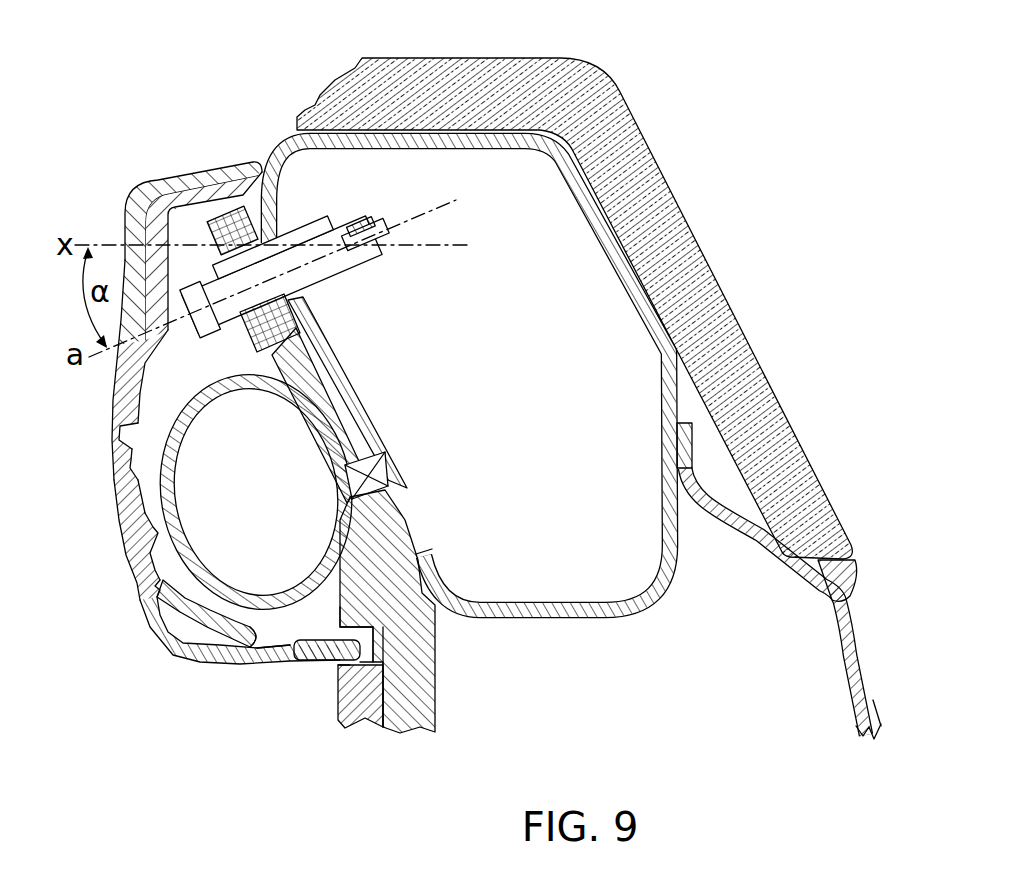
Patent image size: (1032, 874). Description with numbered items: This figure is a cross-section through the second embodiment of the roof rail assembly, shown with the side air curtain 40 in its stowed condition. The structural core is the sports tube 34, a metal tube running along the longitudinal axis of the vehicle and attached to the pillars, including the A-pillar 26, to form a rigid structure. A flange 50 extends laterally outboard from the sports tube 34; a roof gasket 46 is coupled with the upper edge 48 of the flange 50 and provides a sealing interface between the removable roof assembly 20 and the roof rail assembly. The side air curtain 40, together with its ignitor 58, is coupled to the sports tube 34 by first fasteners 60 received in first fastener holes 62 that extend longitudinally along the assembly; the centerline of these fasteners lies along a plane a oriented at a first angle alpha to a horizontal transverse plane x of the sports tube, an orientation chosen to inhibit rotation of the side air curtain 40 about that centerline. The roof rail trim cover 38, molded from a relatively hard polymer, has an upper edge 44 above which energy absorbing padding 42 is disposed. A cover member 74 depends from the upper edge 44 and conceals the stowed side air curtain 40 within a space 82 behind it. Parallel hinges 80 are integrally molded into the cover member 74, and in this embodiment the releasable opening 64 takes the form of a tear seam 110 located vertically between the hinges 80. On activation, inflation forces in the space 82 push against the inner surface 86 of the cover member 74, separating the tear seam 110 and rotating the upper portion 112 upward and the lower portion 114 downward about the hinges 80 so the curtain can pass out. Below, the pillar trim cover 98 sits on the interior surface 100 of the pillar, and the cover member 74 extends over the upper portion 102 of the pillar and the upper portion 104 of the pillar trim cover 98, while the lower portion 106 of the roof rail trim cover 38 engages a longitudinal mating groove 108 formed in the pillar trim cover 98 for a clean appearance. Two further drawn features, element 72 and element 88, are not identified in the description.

The removable roof assembly 20 is at (744, 355).
The A-pillar 26 is at (425, 692).
The sports tube 34 is at (281, 150).
The roof rail trim cover 38 is at (125, 400).
The side air curtain 40 is at (258, 640).
The padding 42 is at (166, 185).
The upper edge 44 is at (224, 185).
The roof gasket 46 is at (843, 567).
The upper edge 48 is at (840, 612).
The flange 50 is at (850, 650).
The ignitor 58 is at (373, 470).
The first fasteners 60 is at (318, 266).
The first fastener holes 62 is at (335, 236).
The releasable opening 64 is at (130, 590).
The notch 72 is at (117, 432).
The cover member 74 is at (130, 510).
The parallel hinges 80 is at (124, 468).
The space 82 is at (216, 598).
The inner surface 86 is at (152, 540).
The retaining lip 88 is at (348, 645).
The pillar trim cover 98 is at (345, 665).
The interior surface 100 is at (387, 535).
The upper portion 102 is at (374, 600).
The upper portion 104 is at (420, 583).
The lower portion 106 is at (240, 630).
The longitudinal mating groove 108 is at (333, 655).
The tear seam 110 is at (150, 580).
The upper portion 112 is at (128, 498).
The lower portion 114 is at (213, 602).